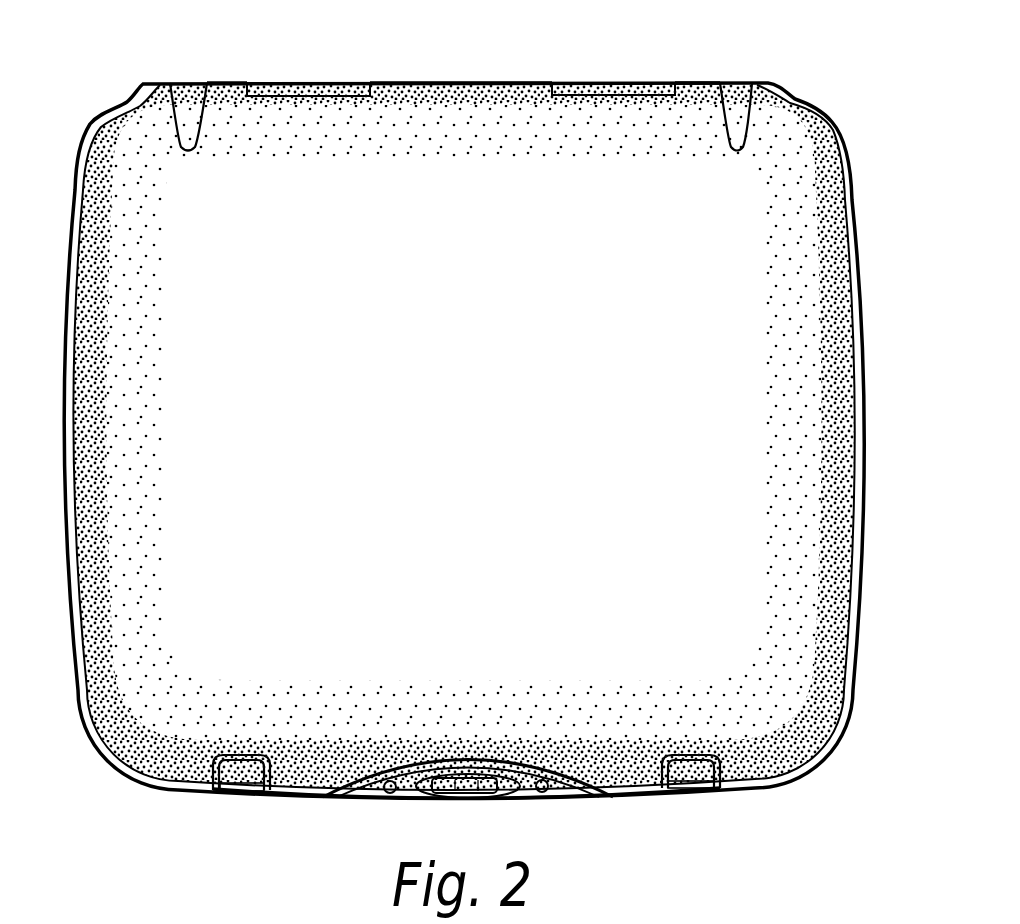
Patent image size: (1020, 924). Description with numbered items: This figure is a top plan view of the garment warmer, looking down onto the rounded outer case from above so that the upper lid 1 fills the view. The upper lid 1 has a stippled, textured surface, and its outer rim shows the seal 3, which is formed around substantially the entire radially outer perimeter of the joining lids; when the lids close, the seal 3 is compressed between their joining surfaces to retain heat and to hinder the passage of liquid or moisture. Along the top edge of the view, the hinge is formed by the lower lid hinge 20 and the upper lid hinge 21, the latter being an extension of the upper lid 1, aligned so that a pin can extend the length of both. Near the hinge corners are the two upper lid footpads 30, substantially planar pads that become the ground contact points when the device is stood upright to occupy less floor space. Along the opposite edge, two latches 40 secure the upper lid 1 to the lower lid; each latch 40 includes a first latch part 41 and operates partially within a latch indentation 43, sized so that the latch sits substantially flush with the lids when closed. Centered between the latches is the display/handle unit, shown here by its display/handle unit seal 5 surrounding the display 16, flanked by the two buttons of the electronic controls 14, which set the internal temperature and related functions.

The upper lid 1 is at (800, 514).
The seal 3 is at (853, 163).
The display/handle unit seal 5 is at (420, 785).
The electronic controls 14 is at (382, 790).
The display 16 is at (463, 787).
The lower lid hinge 20 is at (298, 85).
The upper lid hinge 21 is at (228, 88).
The upper lid footpads 30 is at (188, 110).
The latch 40 is at (222, 792).
The first latch part 41 is at (257, 773).
The latch indentation 43 is at (205, 788).